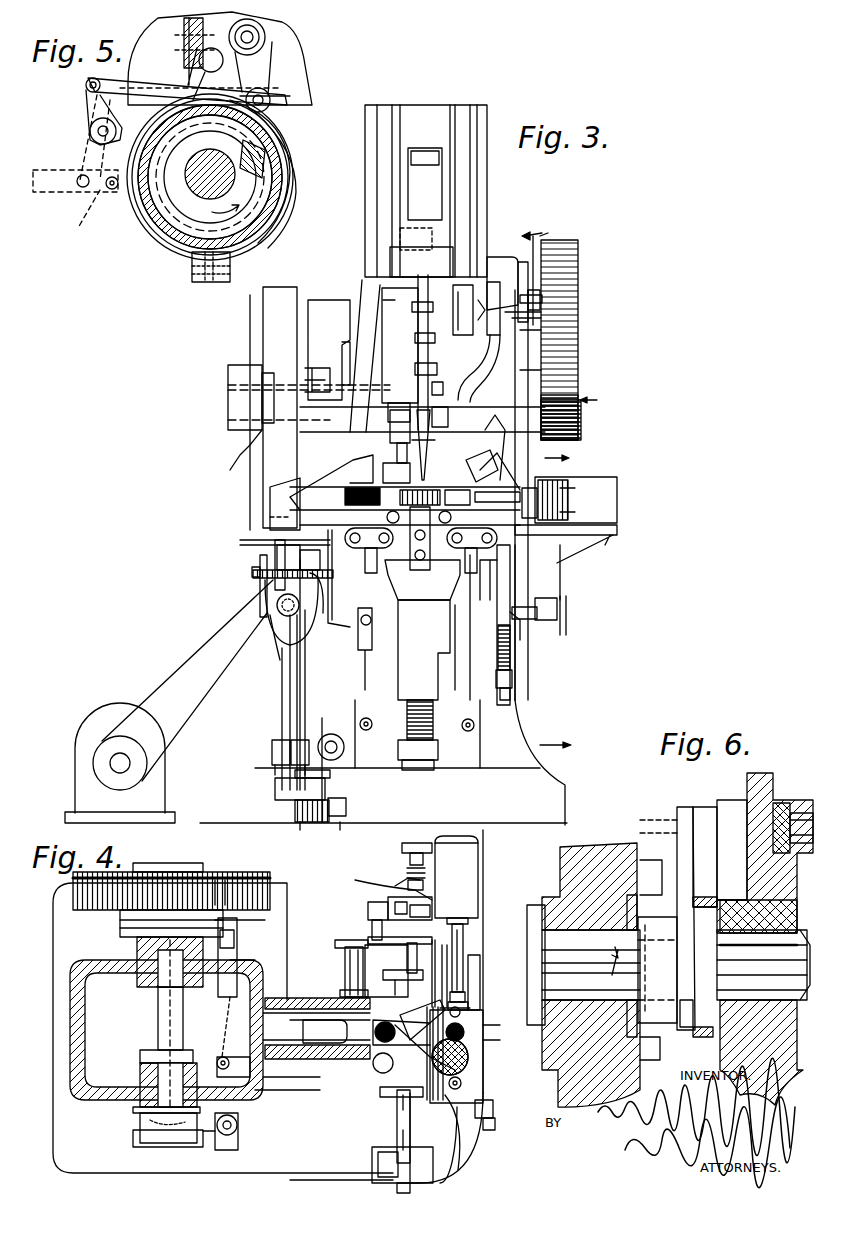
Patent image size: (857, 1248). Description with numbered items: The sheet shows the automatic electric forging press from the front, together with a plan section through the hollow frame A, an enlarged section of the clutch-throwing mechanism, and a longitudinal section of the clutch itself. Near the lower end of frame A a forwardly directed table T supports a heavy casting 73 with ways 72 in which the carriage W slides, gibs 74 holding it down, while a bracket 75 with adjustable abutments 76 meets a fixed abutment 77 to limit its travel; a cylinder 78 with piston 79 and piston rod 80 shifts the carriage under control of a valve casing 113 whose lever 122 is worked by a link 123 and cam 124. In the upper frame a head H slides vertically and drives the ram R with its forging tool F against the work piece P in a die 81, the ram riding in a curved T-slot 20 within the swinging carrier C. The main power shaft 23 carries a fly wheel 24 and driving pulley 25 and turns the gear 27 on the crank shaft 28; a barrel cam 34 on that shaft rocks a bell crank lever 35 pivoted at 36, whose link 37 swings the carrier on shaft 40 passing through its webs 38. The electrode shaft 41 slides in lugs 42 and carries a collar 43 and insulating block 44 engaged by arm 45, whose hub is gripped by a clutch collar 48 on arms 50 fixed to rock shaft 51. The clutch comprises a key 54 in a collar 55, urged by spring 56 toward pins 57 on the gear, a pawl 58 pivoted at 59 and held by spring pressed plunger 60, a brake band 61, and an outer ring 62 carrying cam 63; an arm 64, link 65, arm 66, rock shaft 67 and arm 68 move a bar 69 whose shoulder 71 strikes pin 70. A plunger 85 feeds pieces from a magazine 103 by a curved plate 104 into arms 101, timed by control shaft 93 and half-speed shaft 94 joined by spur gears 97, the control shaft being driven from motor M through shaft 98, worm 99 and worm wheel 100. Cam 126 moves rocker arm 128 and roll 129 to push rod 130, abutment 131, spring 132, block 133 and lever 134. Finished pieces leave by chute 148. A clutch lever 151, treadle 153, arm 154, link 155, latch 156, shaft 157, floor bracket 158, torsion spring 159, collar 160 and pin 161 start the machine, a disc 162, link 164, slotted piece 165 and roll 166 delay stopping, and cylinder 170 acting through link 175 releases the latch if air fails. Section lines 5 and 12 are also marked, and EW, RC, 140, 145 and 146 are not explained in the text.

In FIG. 3, the section line 5— 5 is at (565, 318).
In FIG. 3, the section line 12— 12 is at (554, 602).
In FIG. 3, the curved T-slot 20 is at (413, 233).
In FIG. 3, the main power shaft 23 is at (228, 412).
In FIG. 3, the fly wheel 24 is at (262, 457).
In FIG. 3, the driving pulley 25 is at (248, 368).
In FIG. 3, the gear 27 is at (578, 262).
In FIG. 4, the gear 27 is at (225, 885).
In FIG. 6, the gear 27 is at (607, 845).
In FIG. 5, the crank shaft 28 is at (205, 183).
In FIG. 4, the crank shaft 28 is at (172, 978).
In FIG. 6, the crank shaft 28 is at (676, 965).
In FIG. 3, the barrel cam 34 is at (325, 305).
In FIG. 4, the barrel cam 34 is at (140, 1120).
In FIG. 3, the bell crank lever 35 is at (305, 378).
In FIG. 4, the bell crank lever 35 is at (225, 1150).
In FIG. 4, the pivot 36 is at (238, 1128).
In FIG. 3, the link 37 is at (372, 360).
In FIG. 4, the link 37 is at (288, 1080).
In FIG. 4, the horizontal webs 38 is at (397, 1110).
In FIG. 4, the shaft 40 is at (373, 1033).
In FIG. 4, the supporting shaft 41 is at (465, 1030).
In FIG. 3, the lugs 42 is at (408, 300).
In FIG. 3, the collar 43 is at (410, 318).
In FIG. 3, the insulating block 44 is at (418, 368).
In FIG. 3, the arm 45 is at (418, 338).
In FIG. 4, the arm 45 is at (403, 984).
In FIG. 4, the clutch collar 48 is at (406, 973).
In FIG. 4, the arms 50 is at (316, 1028).
In FIG. 3, the shaft 51 is at (485, 320).
In FIG. 4, the shaft 51 is at (345, 960).
In FIG. 5, the key 54 is at (272, 218).
In FIG. 6, the key 54 is at (657, 970).
In FIG. 5, the collar 55 is at (178, 190).
In FIG. 6, the collar 55 is at (654, 1053).
In FIG. 6, the spring 56 is at (725, 958).
In FIG. 6, the pins 57 is at (632, 893).
In FIG. 5, the pawl 58 is at (270, 190).
In FIG. 3, the pawl 58 is at (523, 270).
In FIG. 6, the pawl 58 is at (688, 892).
In FIG. 5, the pivot 59 is at (265, 37).
In FIG. 6, the pivot 59 is at (697, 818).
In FIG. 5, the spring pressed plunger 60 is at (185, 37).
In FIG. 6, the spring pressed plunger 60 is at (790, 850).
In FIG. 5, the brake band 61 is at (232, 266).
In FIG. 3, the brake band 61 is at (505, 262).
In FIG. 6, the brake band 61 is at (732, 850).
In FIG. 5, the outer ring 62 is at (280, 210).
In FIG. 4, the outer ring 62 is at (120, 924).
In FIG. 6, the outer ring 62 is at (680, 880).
In FIG. 5, the cam 63 is at (275, 162).
In FIG. 3, the arm 64 is at (476, 342).
In FIG. 4, the arm 64 is at (345, 985).
In FIG. 5, the link 65 is at (85, 216).
In FIG. 4, the link 65 is at (278, 990).
In FIG. 5, the arm 66 is at (85, 156).
In FIG. 4, the arm 66 is at (228, 1000).
In FIG. 5, the rock shaft 67 is at (90, 132).
In FIG. 4, the rock shaft 67 is at (238, 943).
In FIG. 5, the arm 68 is at (92, 104).
In FIG. 3, the arm 68 is at (542, 299).
In FIG. 4, the arm 68 is at (240, 924).
In FIG. 5, the bar 69 is at (200, 66).
In FIG. 3, the bar 69 is at (535, 290).
In FIG. 4, the bar 69 is at (240, 888).
In FIG. 6, the bar 69 is at (652, 860).
In FIG. 5, the pin 70 is at (272, 103).
In FIG. 6, the pin 70 is at (690, 872).
In FIG. 5, the shoulder 71 is at (210, 159).
In FIG. 4, the ways 72 is at (480, 975).
In FIG. 3, the casting 73 is at (335, 505).
In FIG. 4, the casting 73 is at (470, 935).
In FIG. 4, the gibs 74 is at (468, 975).
In FIG. 4, the bracket 75 is at (495, 1123).
In FIG. 3, the adjustable abutments 76 is at (581, 430).
In FIG. 4, the adjustable abutments 76 is at (485, 1100).
In FIG. 4, the fixed abutment 77 is at (445, 1045).
In FIG. 3, the cylinder 78 is at (600, 478).
In FIG. 4, the cylinder 78 is at (478, 855).
In FIG. 3, the piston 79 is at (566, 500).
In FIG. 3, the piston rod 80 is at (535, 488).
In FIG. 4, the piston rod 80 is at (470, 960).
In FIG. 4, the die 81 is at (456, 1132).
In FIG. 3, the plunger 85 is at (285, 552).
In FIG. 3, the control shaft 93 is at (515, 578).
In FIG. 3, the half-speed shaft 94 is at (560, 603).
In FIG. 4, the half-speed shaft 94 is at (450, 910).
In FIG. 3, the spur gears 97 is at (293, 648).
In FIG. 3, the shaft 98 is at (275, 640).
In FIG. 3, the worm 99 is at (258, 598).
In FIG. 3, the worm wheel 100 is at (258, 563).
In FIG. 3, the arms 101 is at (360, 652).
In FIG. 3, the magazine 103 is at (422, 590).
In FIG. 3, the curved plate 104 is at (462, 660).
In FIG. 4, the valve casing 113 is at (402, 846).
In FIG. 4, the lever 122 is at (395, 886).
In FIG. 3, the link 123 is at (562, 582).
In FIG. 3, the cam 124 is at (568, 620).
In FIG. 4, the cam 126 is at (355, 880).
In FIG. 3, the rocker arm 128 is at (525, 619).
In FIG. 4, the rocker arm 128 is at (368, 908).
In FIG. 3, the roll 129 is at (525, 640).
In FIG. 3, the rod 130 is at (578, 372).
In FIG. 3, the adjustable abutment 131 is at (512, 685).
In FIG. 3, the spring 132 is at (512, 660).
In FIG. 4, the block 133 is at (368, 915).
In FIG. 3, the lever 134 is at (541, 315).
In FIG. 4, the lever 134 is at (345, 940).
In FIG. 4, the block 140 is at (372, 1160).
In FIG. 4, the bracket 145 is at (397, 1112).
In FIG. 3, the finger 146 is at (487, 447).
In FIG. 3, the chute 148 is at (283, 500).
In FIG. 3, the clutch lever 151 is at (278, 665).
In FIG. 3, the foot treadle 153 is at (330, 775).
In FIG. 3, the arm 154 is at (282, 770).
In FIG. 3, the link 155 is at (272, 750).
In FIG. 3, the latch 156 is at (326, 798).
In FIG. 3, the shaft 157 is at (295, 815).
In FIG. 3, the floor bracket 158 is at (346, 812).
In FIG. 3, the torsion spring 159 is at (324, 832).
In FIG. 3, the collar 160 is at (282, 832).
In FIG. 3, the pin 161 is at (345, 745).
In FIG. 3, the circular disc 162 is at (262, 548).
In FIG. 3, the link 164 is at (290, 700).
In FIG. 3, the slotted piece 165 is at (268, 630).
In FIG. 3, the roll 166 is at (260, 615).
In FIG. 3, the cylinder 170 is at (330, 740).
In FIG. 3, the link 175 is at (383, 723).
In FIG. 5, the frame A is at (285, 68).
In FIG. 3, the frame A is at (335, 702).
In FIG. 4, the frame A is at (95, 1100).
In FIG. 6, the frame A is at (770, 1040).
In FIG. 3, the carrier C is at (405, 352).
In FIG. 3, the electrode wire EW is at (438, 445).
In FIG. 3, the forging tool F is at (392, 438).
In FIG. 3, the head H is at (422, 205).
In FIG. 3, the electric motor M is at (150, 740).
In FIG. 3, the work piece P is at (476, 465).
In FIG. 3, the ram R is at (390, 420).
In FIG. 4, the rack RC is at (472, 1060).
In FIG. 3, the table T is at (424, 685).
In FIG. 4, the carriage W is at (480, 1140).